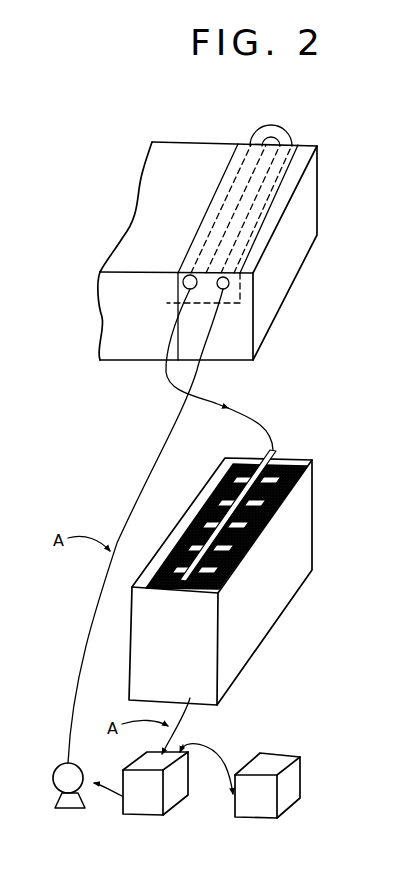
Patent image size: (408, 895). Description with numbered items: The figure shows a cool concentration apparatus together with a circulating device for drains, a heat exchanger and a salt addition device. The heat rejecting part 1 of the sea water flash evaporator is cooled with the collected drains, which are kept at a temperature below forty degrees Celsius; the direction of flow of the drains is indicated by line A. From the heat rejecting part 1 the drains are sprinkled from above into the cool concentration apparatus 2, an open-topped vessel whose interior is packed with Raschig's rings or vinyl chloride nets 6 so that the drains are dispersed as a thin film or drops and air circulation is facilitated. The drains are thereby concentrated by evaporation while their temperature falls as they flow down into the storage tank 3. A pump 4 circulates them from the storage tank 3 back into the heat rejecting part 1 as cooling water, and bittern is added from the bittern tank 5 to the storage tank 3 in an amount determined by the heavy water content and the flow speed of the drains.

The heat rejecting part 1 is at (280, 283).
The cool concentration apparatus 2 is at (298, 557).
The storage tank 3 is at (143, 810).
The pump 4 is at (54, 780).
The bittern tank 5 is at (288, 797).
The vinyl chloride nets 6 is at (290, 464).